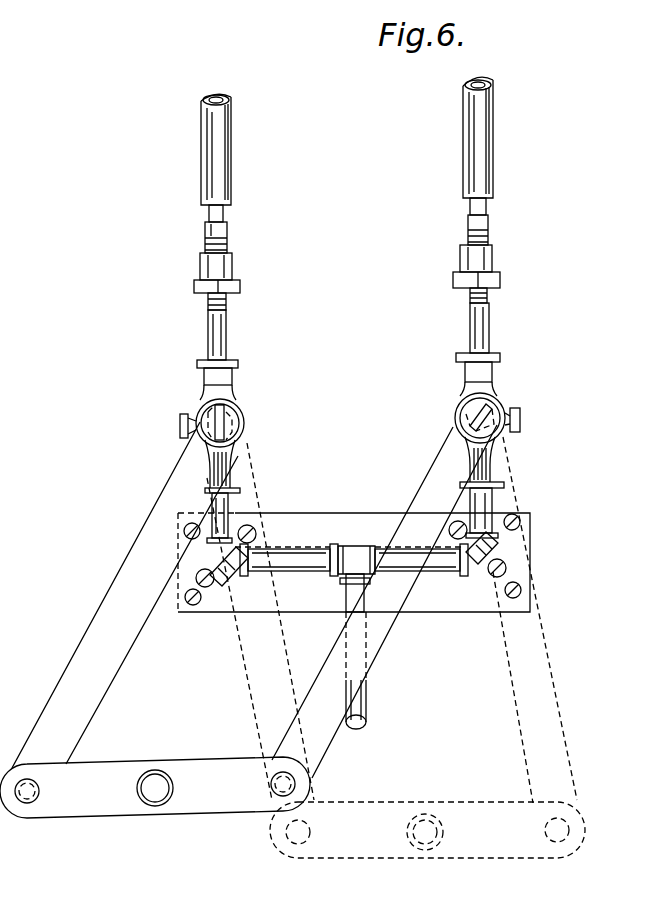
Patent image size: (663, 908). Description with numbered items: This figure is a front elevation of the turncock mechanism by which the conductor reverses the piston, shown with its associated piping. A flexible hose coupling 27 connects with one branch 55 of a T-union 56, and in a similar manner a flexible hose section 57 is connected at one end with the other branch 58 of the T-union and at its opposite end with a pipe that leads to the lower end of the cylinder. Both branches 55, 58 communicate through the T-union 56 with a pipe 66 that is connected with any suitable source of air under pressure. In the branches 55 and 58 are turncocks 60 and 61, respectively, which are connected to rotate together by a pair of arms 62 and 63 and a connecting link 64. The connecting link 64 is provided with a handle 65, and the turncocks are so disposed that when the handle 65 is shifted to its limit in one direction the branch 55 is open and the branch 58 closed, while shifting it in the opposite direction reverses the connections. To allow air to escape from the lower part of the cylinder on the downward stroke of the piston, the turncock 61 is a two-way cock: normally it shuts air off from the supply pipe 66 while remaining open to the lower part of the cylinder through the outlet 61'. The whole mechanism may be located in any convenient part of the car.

The flexible hose coupling 27 is at (203, 175).
The branch 55 is at (227, 331).
The T-union 56 is at (351, 546).
The flexible hose section 57 is at (470, 167).
The branch 58 is at (473, 325).
The turncock 60 is at (232, 422).
The turncock 61 is at (452, 465).
The outlet 61' is at (532, 417).
The arm 62 is at (112, 675).
The arm 63 is at (322, 667).
The connecting link 64 is at (210, 758).
The handle 65 is at (158, 807).
The pipe 66 is at (370, 698).